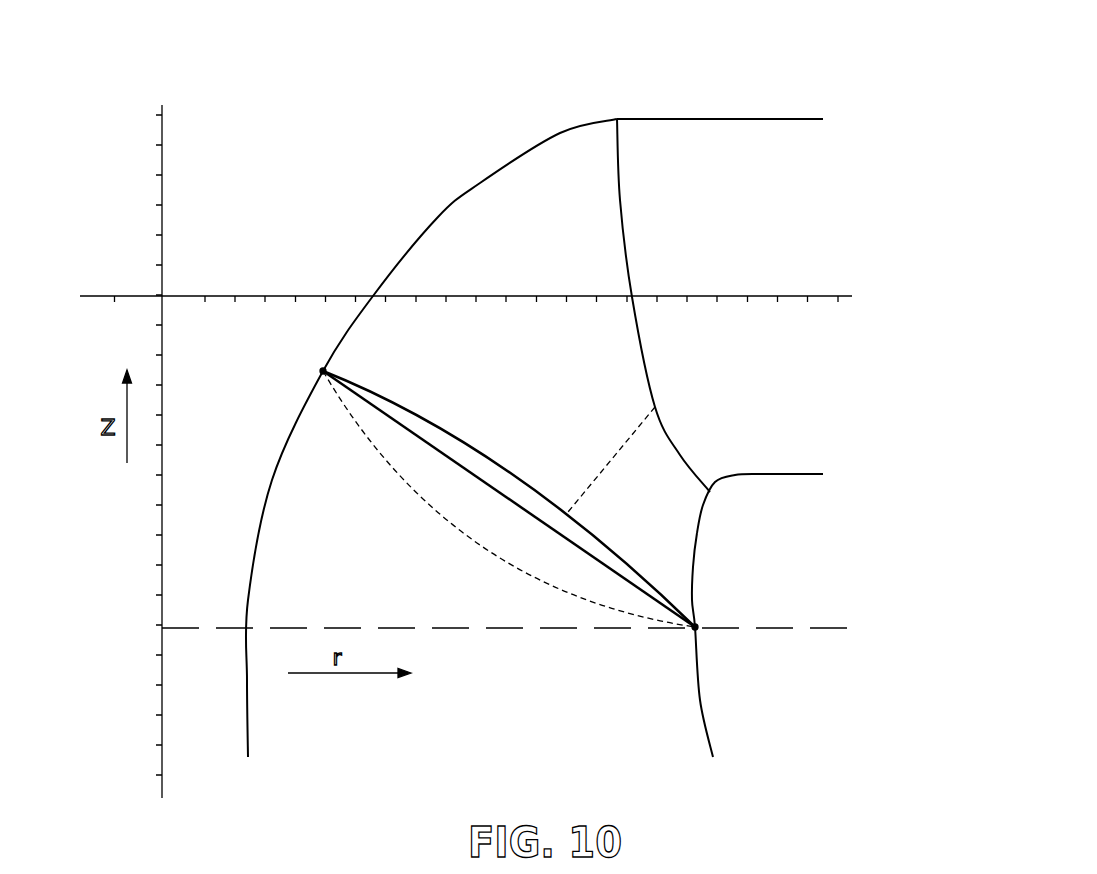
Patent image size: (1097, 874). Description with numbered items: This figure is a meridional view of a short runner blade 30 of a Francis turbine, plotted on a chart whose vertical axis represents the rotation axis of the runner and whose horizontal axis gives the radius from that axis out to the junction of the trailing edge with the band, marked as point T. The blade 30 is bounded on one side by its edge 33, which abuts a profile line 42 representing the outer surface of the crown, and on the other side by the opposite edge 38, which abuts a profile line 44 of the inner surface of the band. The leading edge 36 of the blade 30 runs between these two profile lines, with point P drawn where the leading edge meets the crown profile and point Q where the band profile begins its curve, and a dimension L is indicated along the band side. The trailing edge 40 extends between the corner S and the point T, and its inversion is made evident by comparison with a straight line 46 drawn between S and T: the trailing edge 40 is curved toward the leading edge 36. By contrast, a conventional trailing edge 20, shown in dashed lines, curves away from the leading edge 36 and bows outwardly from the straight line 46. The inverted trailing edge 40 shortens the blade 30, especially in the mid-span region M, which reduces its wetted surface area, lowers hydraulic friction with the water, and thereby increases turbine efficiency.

The conventional trailing edge 20 is at (413, 492).
The blade 30 is at (538, 378).
The edge 33 is at (438, 217).
The leading edge 36 is at (622, 225).
The opposite edge 38 is at (693, 550).
The trailing edge 40 is at (483, 447).
The profile line 42 is at (273, 477).
The profile line 44 is at (693, 570).
The straight line 46 is at (607, 567).
The mid-span region M is at (608, 462).
The corner S is at (316, 366).
The point T is at (706, 628).
The point P is at (617, 114).
The point Q is at (717, 473).
The length L is at (805, 474).